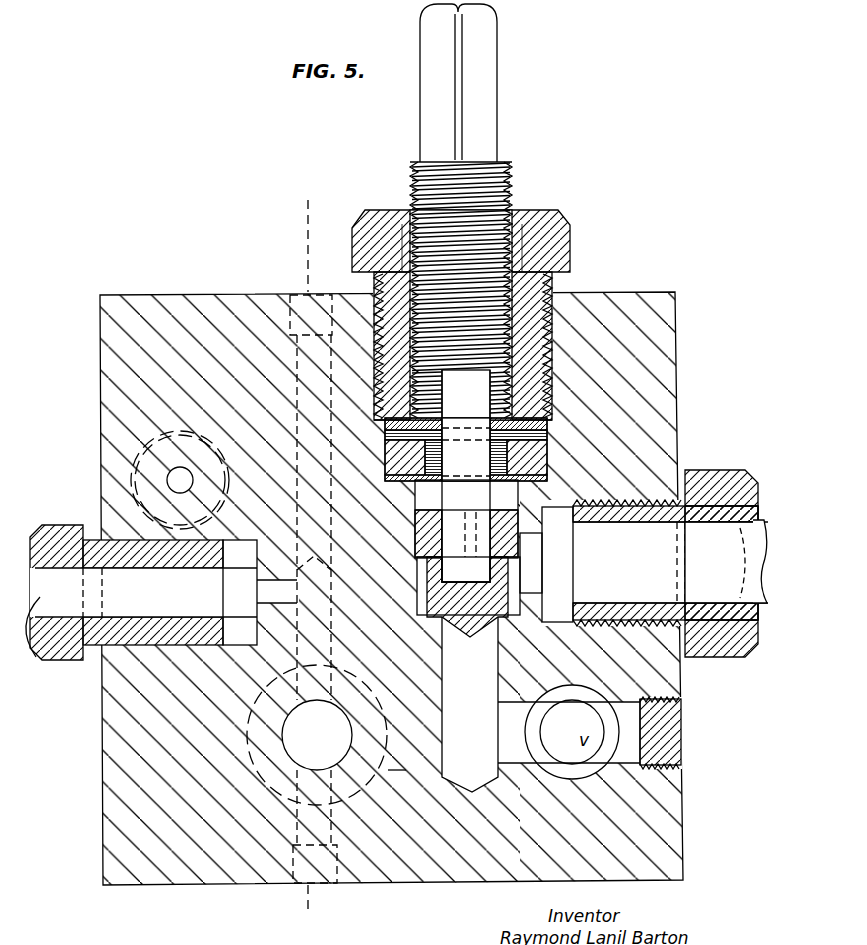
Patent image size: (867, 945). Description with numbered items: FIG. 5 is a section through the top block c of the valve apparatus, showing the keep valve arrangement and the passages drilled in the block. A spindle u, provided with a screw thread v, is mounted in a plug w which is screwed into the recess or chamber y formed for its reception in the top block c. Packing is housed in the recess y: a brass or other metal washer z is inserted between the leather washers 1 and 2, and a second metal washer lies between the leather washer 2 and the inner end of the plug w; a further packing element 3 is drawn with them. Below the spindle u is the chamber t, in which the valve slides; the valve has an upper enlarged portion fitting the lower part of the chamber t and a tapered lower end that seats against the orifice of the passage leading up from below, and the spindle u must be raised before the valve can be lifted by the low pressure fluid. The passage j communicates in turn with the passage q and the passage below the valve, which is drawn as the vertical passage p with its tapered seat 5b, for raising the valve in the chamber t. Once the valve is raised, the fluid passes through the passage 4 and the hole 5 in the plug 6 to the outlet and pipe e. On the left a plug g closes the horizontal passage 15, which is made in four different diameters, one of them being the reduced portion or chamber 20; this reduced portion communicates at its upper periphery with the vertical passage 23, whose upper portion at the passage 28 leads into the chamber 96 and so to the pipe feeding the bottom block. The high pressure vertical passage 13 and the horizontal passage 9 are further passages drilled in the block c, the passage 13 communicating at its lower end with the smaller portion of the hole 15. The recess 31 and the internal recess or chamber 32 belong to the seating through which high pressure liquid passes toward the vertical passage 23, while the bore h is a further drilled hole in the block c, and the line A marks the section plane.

The top block c is at (108, 886).
The spindle u is at (488, 110).
The screw thread v is at (512, 188).
The plug w is at (572, 244).
The leather washer 1 is at (548, 477).
The leather washer 2 is at (548, 436).
The packing ring 3 is at (540, 421).
The metal washer z is at (549, 458).
The recess or chamber y is at (546, 432).
The recess 31 is at (417, 531).
The internal recess or chamber 32 is at (472, 512).
The chamber t is at (420, 601).
The cone point 5b is at (470, 640).
The vertical passage p is at (470, 704).
The passage q is at (569, 732).
The passage j is at (575, 780).
The passage 4 is at (531, 563).
The hole 5 is at (655, 563).
The plug 6 is at (705, 470).
The pipe e is at (760, 520).
The plug bolt g is at (36, 660).
The chamber 96 is at (240, 592).
The passage 28 is at (270, 600).
The vertical passage 23 is at (333, 600).
The high pressure vertical passage 13 is at (298, 466).
The bore h is at (200, 465).
The horizontal passage 15 is at (345, 723).
The reduced portion or chamber 20 is at (380, 676).
The horizontal passage 9 is at (402, 771).
The section line A is at (307, 559).